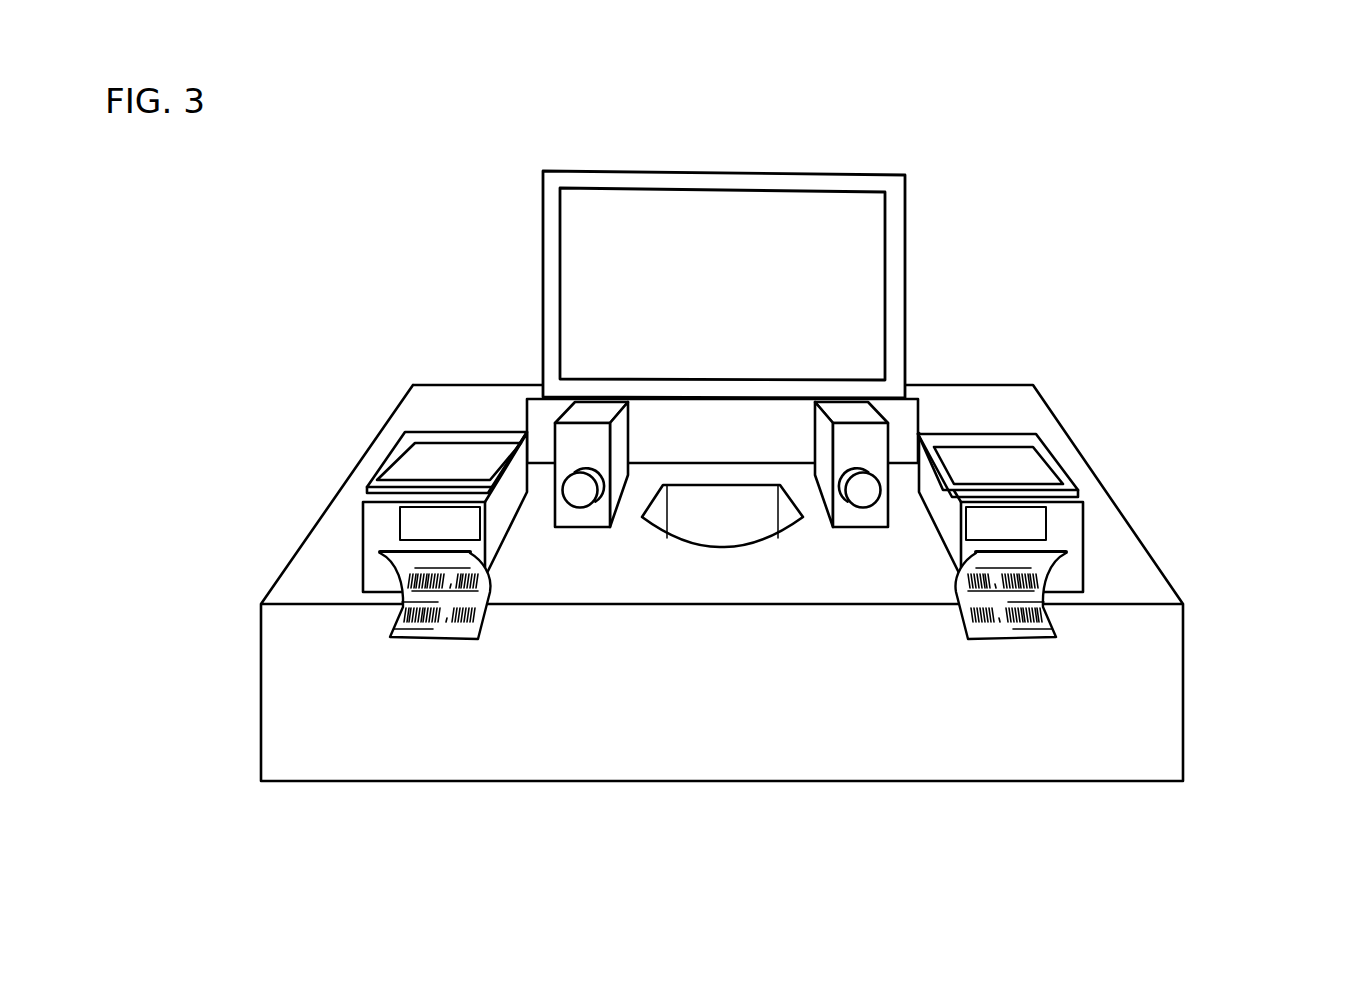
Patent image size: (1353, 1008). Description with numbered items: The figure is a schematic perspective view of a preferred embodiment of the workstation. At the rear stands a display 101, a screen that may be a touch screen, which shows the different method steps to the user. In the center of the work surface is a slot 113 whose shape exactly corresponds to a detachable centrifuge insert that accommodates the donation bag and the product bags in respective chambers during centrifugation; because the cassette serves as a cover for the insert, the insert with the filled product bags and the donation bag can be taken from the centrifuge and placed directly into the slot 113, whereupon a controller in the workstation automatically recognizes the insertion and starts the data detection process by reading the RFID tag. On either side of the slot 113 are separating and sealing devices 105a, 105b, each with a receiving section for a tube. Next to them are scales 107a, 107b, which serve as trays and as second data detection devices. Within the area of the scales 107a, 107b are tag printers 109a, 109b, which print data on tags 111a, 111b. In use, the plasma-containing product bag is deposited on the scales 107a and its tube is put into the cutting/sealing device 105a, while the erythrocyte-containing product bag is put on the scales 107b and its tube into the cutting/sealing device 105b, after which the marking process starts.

The display 101 is at (887, 220).
The separating and sealing device 105a is at (573, 490).
The separating and sealing device 105b is at (862, 487).
The scales 107a is at (428, 468).
The scales 107b is at (1025, 478).
The tag printer 109a is at (380, 552).
The tag printer 109b is at (1072, 570).
The tag 111a is at (440, 602).
The tag 111b is at (1017, 629).
The slot 113 is at (702, 515).